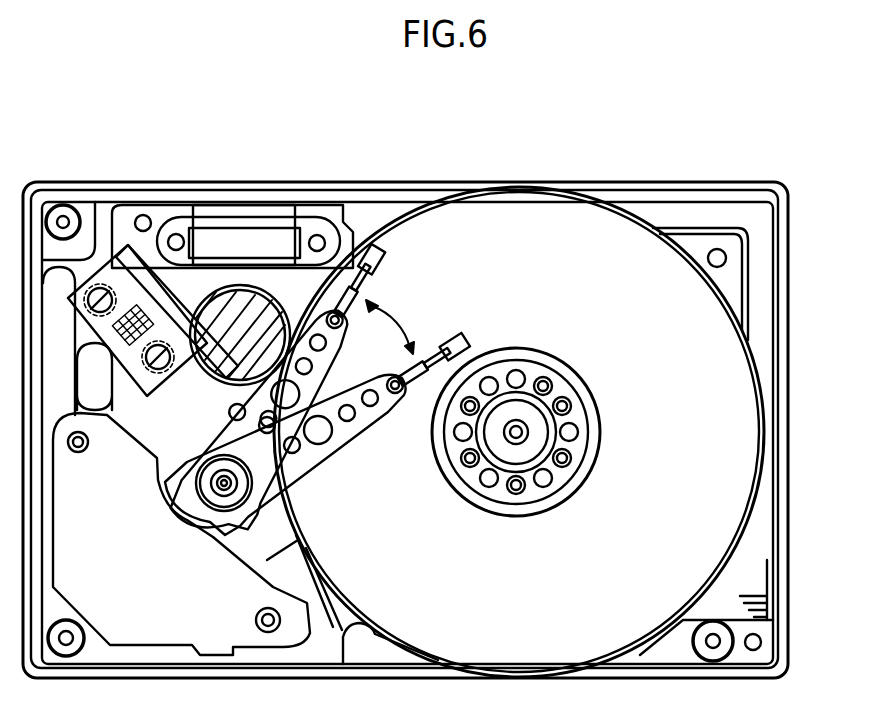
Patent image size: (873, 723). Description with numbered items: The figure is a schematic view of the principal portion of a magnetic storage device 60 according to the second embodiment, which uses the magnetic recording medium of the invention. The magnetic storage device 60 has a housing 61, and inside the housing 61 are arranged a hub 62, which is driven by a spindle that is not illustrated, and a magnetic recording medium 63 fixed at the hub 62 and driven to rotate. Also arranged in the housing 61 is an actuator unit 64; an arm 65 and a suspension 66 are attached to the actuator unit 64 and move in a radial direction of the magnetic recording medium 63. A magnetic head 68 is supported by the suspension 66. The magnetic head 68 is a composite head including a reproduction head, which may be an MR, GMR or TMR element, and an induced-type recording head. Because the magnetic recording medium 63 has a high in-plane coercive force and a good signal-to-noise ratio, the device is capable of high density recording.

The magnetic storage device 60 is at (152, 122).
The housing 61 is at (287, 182).
The hub 62 is at (572, 492).
The magnetic recording medium 63 is at (733, 397).
The actuator unit 64 is at (247, 513).
The arm 65 is at (310, 462).
The suspension 66 is at (432, 355).
The magnetic head 68 is at (467, 333).